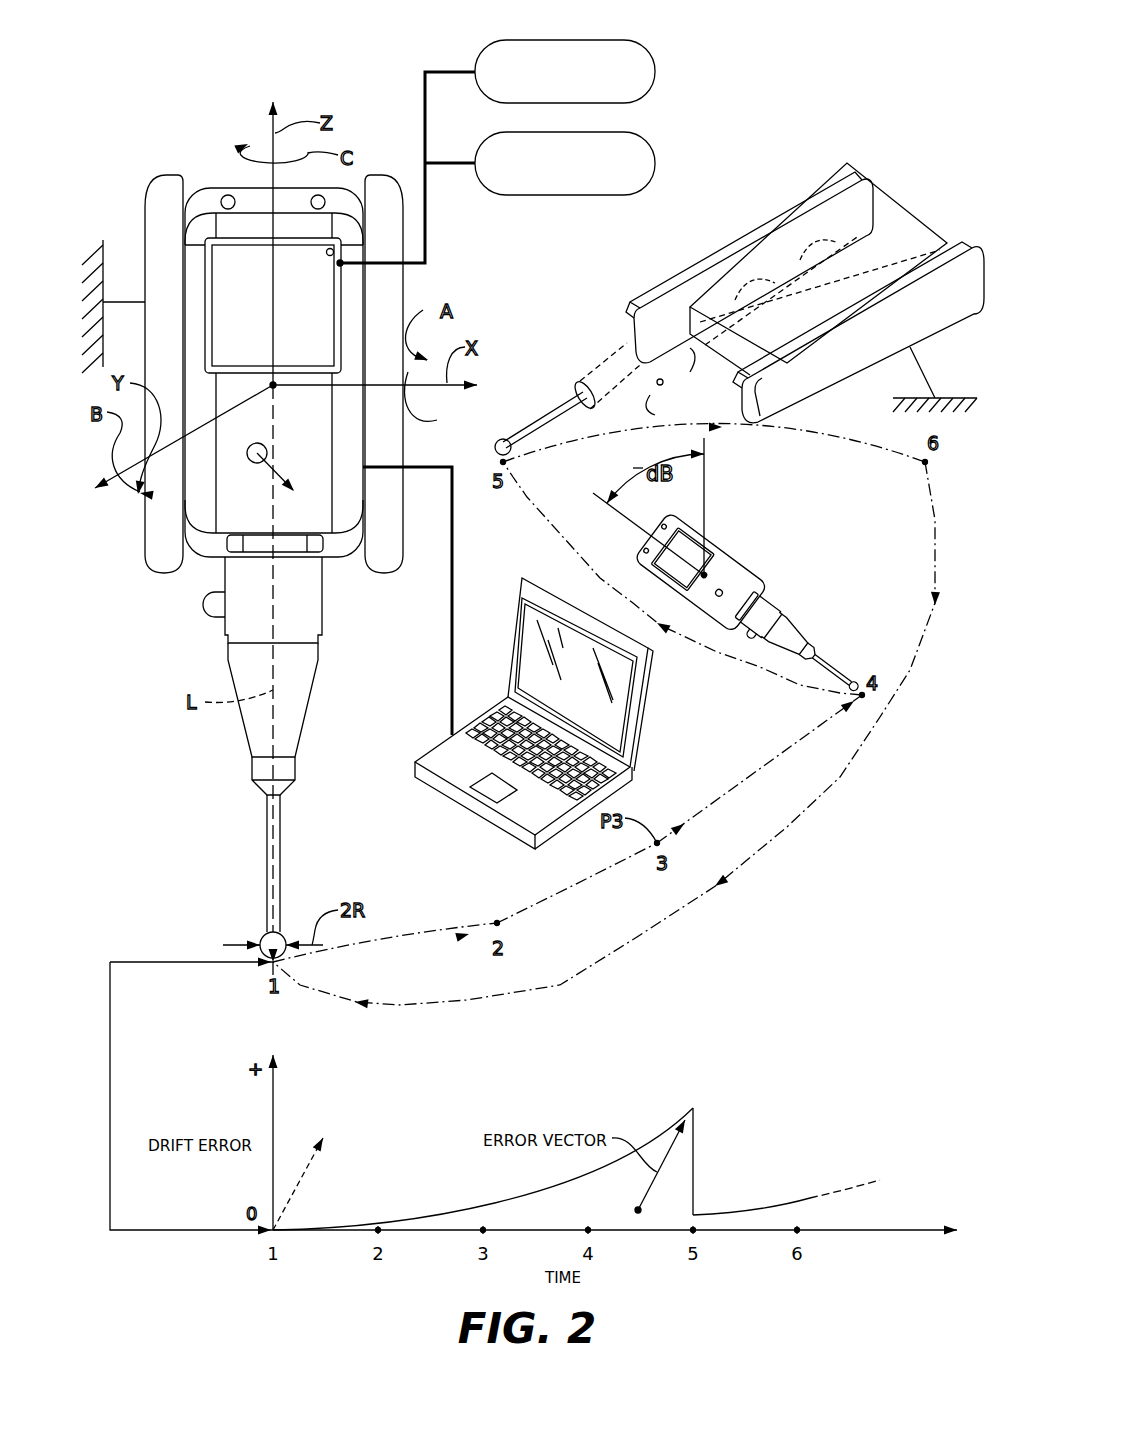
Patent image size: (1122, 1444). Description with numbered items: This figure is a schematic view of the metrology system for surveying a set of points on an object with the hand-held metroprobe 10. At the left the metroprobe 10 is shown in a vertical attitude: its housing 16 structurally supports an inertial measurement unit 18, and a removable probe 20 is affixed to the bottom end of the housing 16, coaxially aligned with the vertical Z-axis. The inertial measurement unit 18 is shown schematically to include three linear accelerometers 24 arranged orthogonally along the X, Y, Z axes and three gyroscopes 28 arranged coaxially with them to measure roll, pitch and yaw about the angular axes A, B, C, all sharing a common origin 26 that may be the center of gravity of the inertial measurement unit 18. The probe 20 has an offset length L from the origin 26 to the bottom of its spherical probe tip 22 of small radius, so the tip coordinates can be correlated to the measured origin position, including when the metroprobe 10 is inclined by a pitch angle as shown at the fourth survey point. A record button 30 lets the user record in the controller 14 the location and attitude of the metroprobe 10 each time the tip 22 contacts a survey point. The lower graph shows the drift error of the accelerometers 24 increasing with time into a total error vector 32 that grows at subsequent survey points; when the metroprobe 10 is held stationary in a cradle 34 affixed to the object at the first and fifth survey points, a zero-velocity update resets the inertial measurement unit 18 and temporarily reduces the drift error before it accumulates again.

The metroprobe 10 is at (206, 170).
The controller 14 is at (437, 748).
The housing 16 is at (337, 563).
The Inertial Measurement Unit (IMU) 18 is at (286, 359).
The probe 20 is at (267, 825).
The probe tip 22 is at (263, 937).
The accelerometers 24 is at (640, 42).
The origin 26 is at (276, 388).
The gyroscopes 28 is at (643, 137).
The record button 30 is at (252, 466).
The error vector 32 is at (693, 1160).
The cradle 34 is at (145, 225).